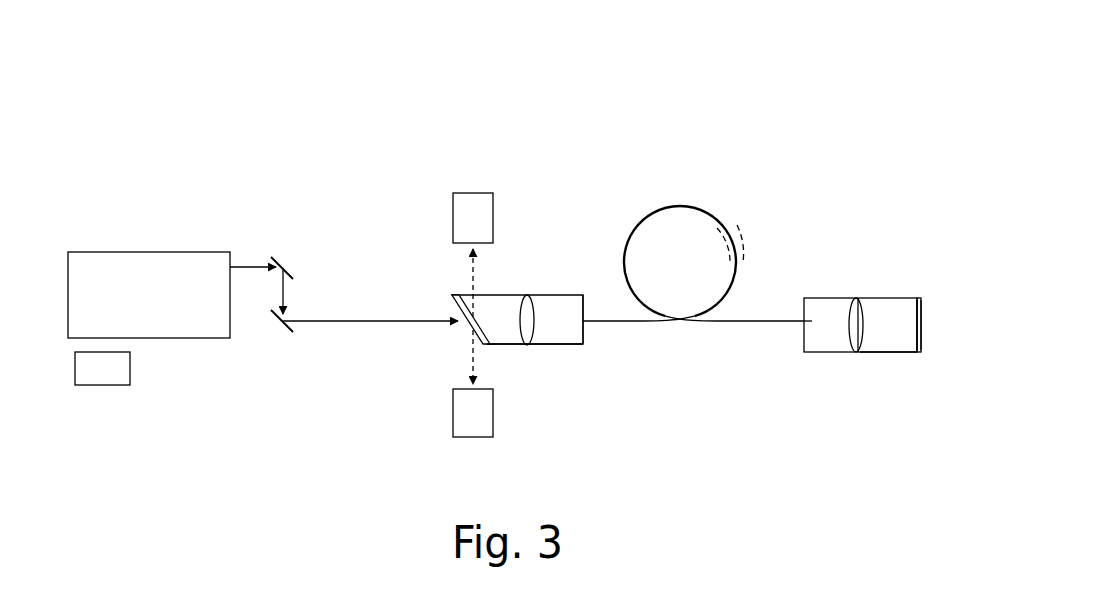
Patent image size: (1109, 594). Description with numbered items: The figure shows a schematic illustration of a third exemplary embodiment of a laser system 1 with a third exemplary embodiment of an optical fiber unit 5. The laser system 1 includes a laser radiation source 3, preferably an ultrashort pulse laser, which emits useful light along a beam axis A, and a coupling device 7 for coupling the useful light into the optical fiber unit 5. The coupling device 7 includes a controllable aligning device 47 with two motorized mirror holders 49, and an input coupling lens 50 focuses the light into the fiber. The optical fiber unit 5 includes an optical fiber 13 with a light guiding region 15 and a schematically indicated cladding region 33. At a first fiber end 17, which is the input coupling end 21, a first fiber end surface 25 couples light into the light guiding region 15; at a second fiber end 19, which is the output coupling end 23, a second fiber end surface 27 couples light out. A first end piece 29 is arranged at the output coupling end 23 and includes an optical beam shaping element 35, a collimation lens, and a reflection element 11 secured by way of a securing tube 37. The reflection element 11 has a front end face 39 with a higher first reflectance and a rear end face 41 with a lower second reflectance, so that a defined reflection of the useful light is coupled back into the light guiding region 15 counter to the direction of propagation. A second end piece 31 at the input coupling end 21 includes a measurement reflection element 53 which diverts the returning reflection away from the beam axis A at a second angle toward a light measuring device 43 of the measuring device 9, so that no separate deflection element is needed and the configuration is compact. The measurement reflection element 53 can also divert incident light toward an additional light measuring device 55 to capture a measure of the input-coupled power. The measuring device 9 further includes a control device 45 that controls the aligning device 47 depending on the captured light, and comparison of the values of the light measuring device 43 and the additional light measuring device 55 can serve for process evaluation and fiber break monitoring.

The laser system 1 is at (576, 91).
The laser radiation source 3 is at (150, 252).
The optical fiber unit 5 is at (693, 234).
The coupling device 7 is at (370, 371).
The measuring device 9 is at (473, 291).
The reflection element 11 is at (919, 298).
The optical fiber 13 is at (688, 204).
The light guiding region 15 is at (707, 322).
The first fiber end 17 is at (538, 376).
The second fiber end 19 is at (860, 395).
The input coupling end 21 is at (533, 365).
The output coupling end 23 is at (852, 365).
The first fiber end surface 25 is at (572, 323).
The second fiber end surface 27 is at (808, 325).
The first end piece 29 is at (894, 348).
The second end piece 31 is at (667, 333).
The cladding region 33 is at (736, 223).
The optical beam shaping element 35 is at (860, 336).
The securing tube 37 is at (502, 346).
The front end face 39 is at (912, 317).
The rear end face 41 is at (925, 338).
The light measuring device 43 is at (473, 193).
The control device 45 is at (100, 386).
The aligning device 47 is at (281, 290).
The motorized mirror holders 49 is at (288, 264).
The input coupling lens 50 is at (533, 294).
The measurement reflection element 53 is at (452, 301).
The additional light measuring device 55 is at (453, 412).
The beam axis A is at (373, 323).